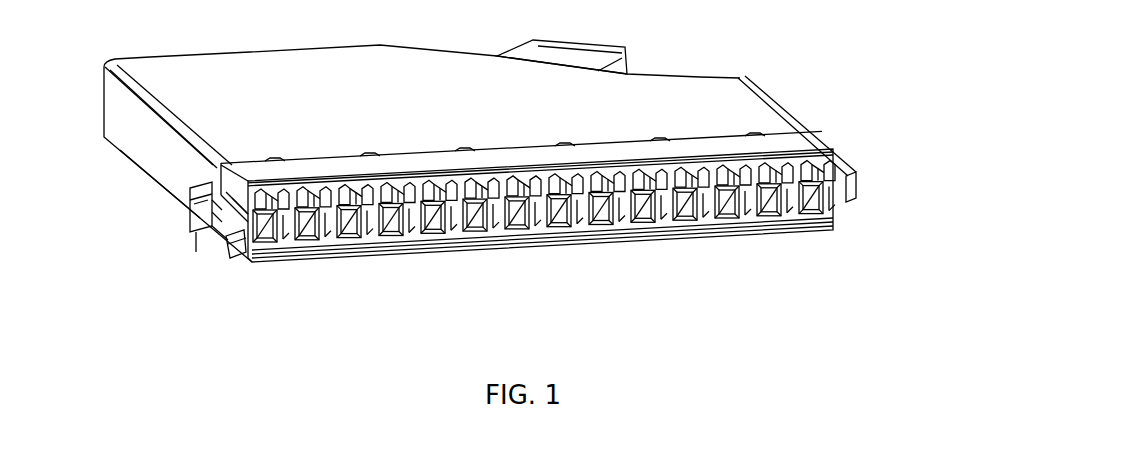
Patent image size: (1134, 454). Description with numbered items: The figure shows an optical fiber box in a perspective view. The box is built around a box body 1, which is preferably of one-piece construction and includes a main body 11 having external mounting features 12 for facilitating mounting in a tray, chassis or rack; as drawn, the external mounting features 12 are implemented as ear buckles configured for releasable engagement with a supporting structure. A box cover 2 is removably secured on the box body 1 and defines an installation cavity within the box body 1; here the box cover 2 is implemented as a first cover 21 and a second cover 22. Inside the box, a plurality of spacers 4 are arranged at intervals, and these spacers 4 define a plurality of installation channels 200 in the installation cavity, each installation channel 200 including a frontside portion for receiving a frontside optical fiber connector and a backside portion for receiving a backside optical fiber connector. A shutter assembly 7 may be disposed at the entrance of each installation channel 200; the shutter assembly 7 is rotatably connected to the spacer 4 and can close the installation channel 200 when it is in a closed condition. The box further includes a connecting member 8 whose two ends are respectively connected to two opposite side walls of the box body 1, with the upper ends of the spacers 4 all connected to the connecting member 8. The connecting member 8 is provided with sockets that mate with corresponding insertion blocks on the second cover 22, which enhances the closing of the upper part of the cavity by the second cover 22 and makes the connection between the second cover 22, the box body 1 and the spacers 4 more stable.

The box body 1 is at (101, 222).
The main body 11 is at (188, 168).
The external mounting features 12 is at (195, 222).
The box cover 2 is at (526, 118).
The first cover 21 is at (744, 95).
The second cover 22 is at (770, 148).
The installation channel 200 is at (541, 243).
The spacer 4 is at (369, 256).
The shutter assembly 7 is at (481, 254).
The connecting member 8 is at (242, 250).